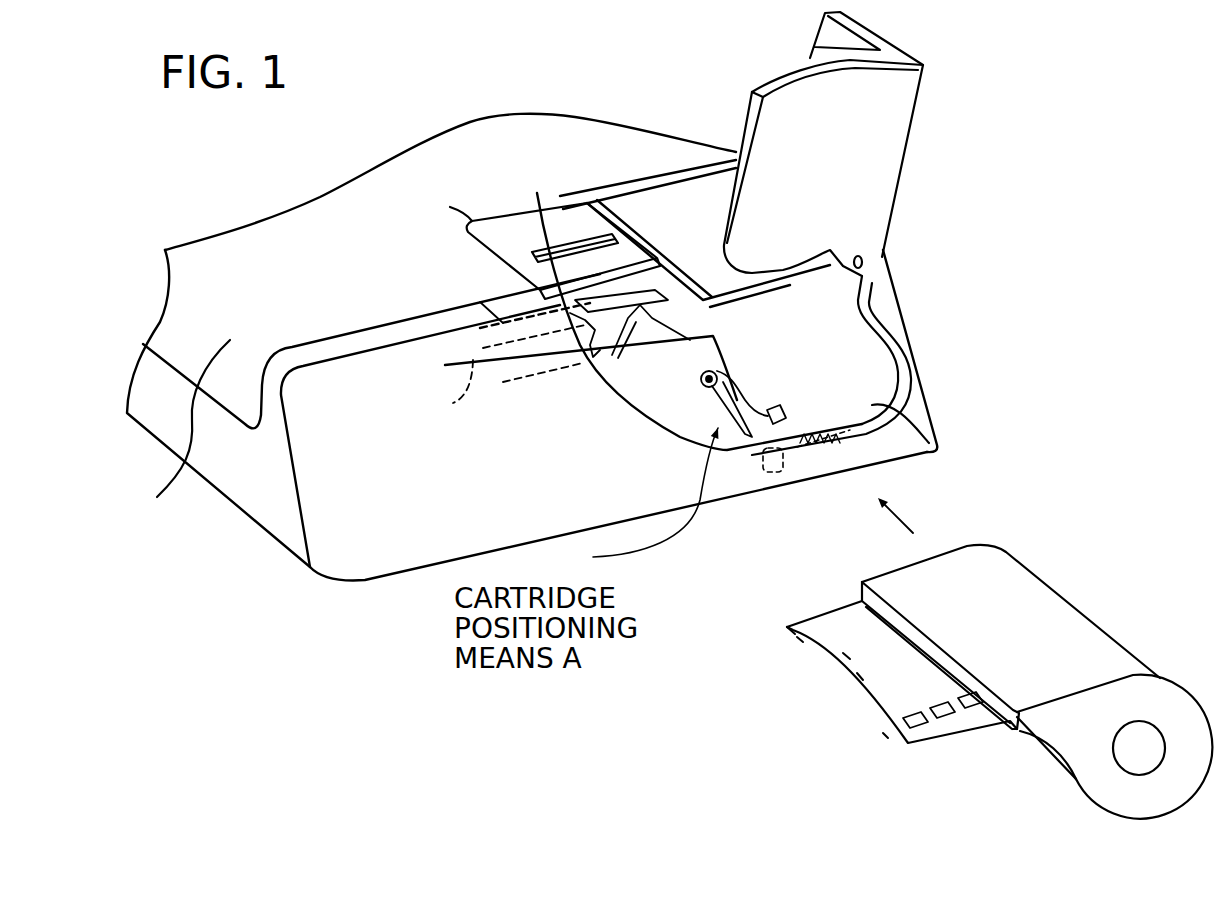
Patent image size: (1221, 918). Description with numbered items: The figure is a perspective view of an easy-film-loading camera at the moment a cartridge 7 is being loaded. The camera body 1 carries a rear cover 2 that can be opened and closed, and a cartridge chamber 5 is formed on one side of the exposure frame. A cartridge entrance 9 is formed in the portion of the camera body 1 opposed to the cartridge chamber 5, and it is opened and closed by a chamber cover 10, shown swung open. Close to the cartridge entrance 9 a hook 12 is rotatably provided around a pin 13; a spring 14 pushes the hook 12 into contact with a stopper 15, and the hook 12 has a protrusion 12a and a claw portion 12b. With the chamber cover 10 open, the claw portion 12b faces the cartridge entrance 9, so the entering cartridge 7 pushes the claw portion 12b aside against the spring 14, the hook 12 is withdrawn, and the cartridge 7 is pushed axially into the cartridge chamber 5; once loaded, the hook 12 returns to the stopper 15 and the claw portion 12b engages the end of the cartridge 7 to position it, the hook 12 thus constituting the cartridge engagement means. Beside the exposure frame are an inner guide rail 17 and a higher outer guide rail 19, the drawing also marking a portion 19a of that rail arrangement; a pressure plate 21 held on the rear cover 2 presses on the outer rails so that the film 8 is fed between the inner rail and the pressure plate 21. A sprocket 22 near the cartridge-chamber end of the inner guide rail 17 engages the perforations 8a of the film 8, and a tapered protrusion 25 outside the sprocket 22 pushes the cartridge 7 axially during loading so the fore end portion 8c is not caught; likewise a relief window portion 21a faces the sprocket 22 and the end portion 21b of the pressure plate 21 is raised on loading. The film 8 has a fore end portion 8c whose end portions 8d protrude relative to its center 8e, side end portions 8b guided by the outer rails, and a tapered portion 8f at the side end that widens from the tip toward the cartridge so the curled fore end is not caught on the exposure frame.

The camera body 1 is at (341, 553).
The rear cover 2 is at (181, 433).
The cartridge chamber 5 is at (863, 348).
The cartridge 7 is at (1053, 603).
The film 8 is at (883, 687).
The perforation 8a is at (947, 718).
The side end portion 8b is at (843, 610).
The fore end portion 8c is at (843, 653).
The end portion 8d is at (797, 637).
The center 8e is at (857, 673).
The tapered portion 8f is at (793, 630).
The cartridge entrance 9 is at (930, 450).
The chamber cover 10 is at (880, 167).
The hook 12 is at (713, 398).
The protrusion 12a is at (741, 391).
The claw portion 12b is at (782, 412).
The pin 13 is at (702, 380).
The spring 14 is at (837, 460).
The stopper 15 is at (800, 475).
The inner guide rail 17 is at (478, 297).
The outer guide rail 19 is at (453, 403).
The hook 19a is at (590, 360).
The pressure plate 21 is at (533, 230).
The relief window portion 21a is at (483, 213).
The end portion of the pressure plate 21b is at (567, 260).
The sprocket 22 is at (570, 312).
The tapered protrusion 25 is at (635, 343).